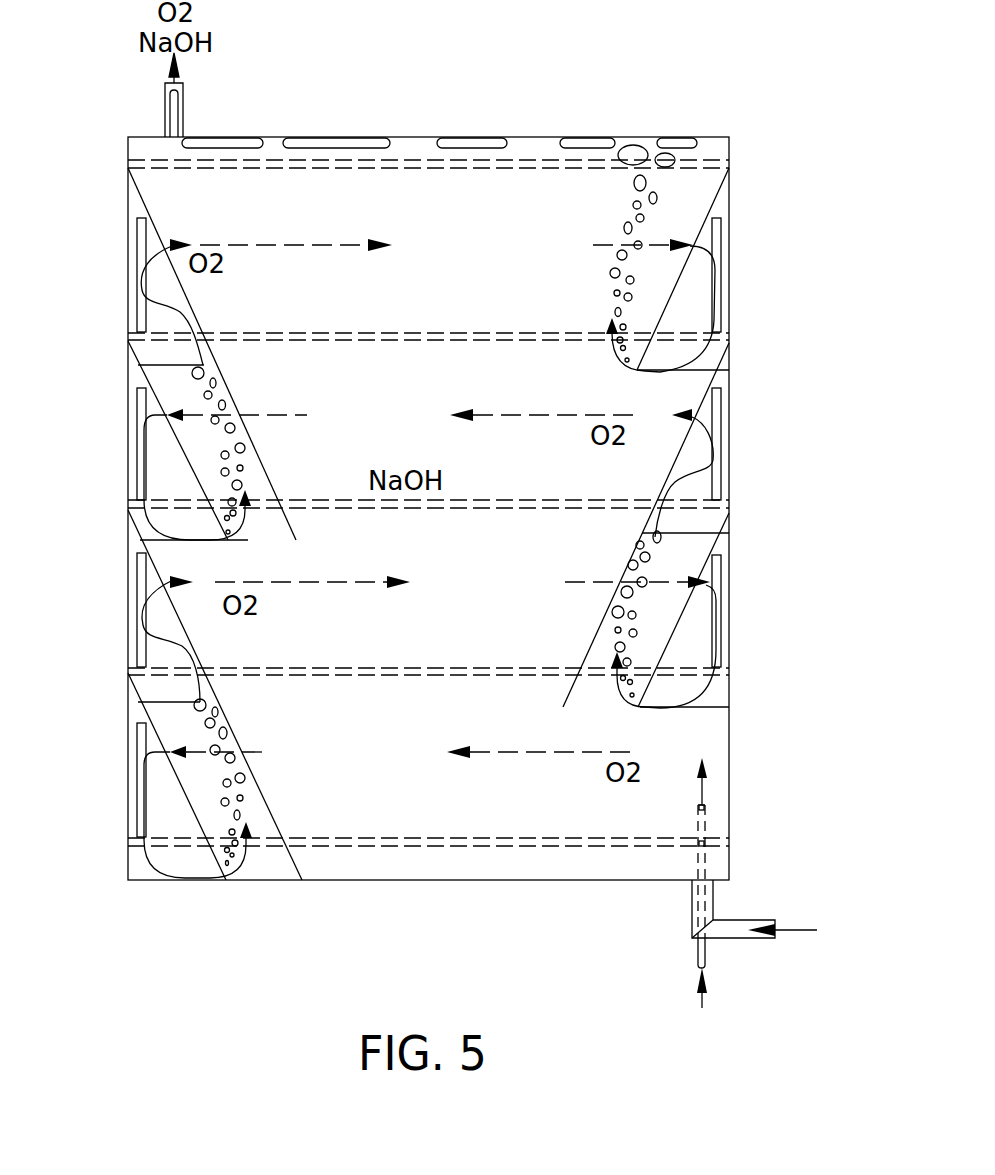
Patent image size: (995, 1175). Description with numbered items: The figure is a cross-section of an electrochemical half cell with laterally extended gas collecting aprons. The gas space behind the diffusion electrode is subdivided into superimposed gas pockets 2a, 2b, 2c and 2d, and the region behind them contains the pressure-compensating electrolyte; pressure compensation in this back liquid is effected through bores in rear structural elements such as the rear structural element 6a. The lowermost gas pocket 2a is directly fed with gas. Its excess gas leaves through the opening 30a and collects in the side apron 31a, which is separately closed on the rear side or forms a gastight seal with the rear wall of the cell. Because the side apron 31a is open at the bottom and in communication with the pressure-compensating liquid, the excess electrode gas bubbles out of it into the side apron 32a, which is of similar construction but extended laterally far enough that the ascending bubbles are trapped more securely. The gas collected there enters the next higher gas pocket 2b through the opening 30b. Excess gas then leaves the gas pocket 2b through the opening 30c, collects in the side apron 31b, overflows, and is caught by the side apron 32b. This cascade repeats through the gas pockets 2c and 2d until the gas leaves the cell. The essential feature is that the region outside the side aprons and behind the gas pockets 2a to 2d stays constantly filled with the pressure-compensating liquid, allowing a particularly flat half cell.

The gas pocket 2a is at (683, 752).
The gas pocket 2b is at (567, 565).
The gas pocket 2c is at (665, 403).
The gas pocket 2d is at (685, 193).
The rear structural element 6a is at (532, 838).
The opening 30a is at (147, 803).
The opening 30b is at (147, 630).
The opening 30c is at (713, 627).
The side apron 31a is at (243, 843).
The side apron 31b is at (660, 662).
The side apron 32a is at (195, 654).
The side apron 32b is at (647, 543).